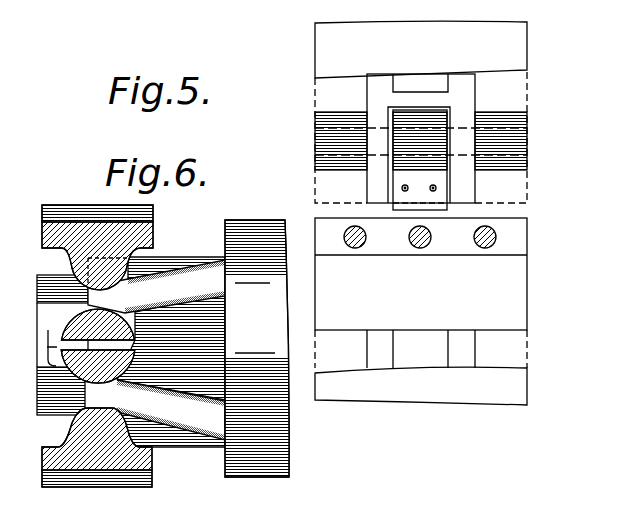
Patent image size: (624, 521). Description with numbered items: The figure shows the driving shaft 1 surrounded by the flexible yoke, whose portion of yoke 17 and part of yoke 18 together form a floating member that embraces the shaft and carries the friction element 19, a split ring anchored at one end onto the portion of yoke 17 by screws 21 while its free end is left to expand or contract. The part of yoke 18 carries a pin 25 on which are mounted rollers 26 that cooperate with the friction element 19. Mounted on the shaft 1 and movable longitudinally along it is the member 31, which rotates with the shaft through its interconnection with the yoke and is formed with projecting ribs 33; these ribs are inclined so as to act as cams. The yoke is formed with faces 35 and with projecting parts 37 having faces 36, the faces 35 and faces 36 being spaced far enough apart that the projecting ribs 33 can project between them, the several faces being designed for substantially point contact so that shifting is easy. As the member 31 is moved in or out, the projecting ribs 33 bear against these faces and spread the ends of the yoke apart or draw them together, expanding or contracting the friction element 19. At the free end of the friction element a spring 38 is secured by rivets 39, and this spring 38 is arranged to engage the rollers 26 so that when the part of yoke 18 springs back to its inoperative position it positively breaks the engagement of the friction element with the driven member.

In FIG. 6, the shaft 1 is at (62, 418).
In FIG. 6, the portion of yoke 17 is at (153, 245).
In FIG. 5, the part of yoke 18 is at (460, 110).
In FIG. 6, the part of yoke 18 is at (113, 487).
In FIG. 5, the friction element 19 is at (517, 55).
In FIG. 5, the screws 21 is at (358, 247).
In FIG. 5, the pin 25 is at (520, 153).
In FIG. 5, the rollers 26 is at (433, 123).
In FIG. 6, the member 31 is at (290, 476).
In FIG. 6, the projecting ribs 33 is at (178, 403).
In FIG. 6, the faces 35 is at (85, 275).
In FIG. 6, the faces 36 is at (73, 310).
In FIG. 6, the projecting parts 37 is at (120, 350).
In FIG. 5, the spring 38 is at (398, 181).
In FIG. 5, the rivets 39 is at (437, 186).